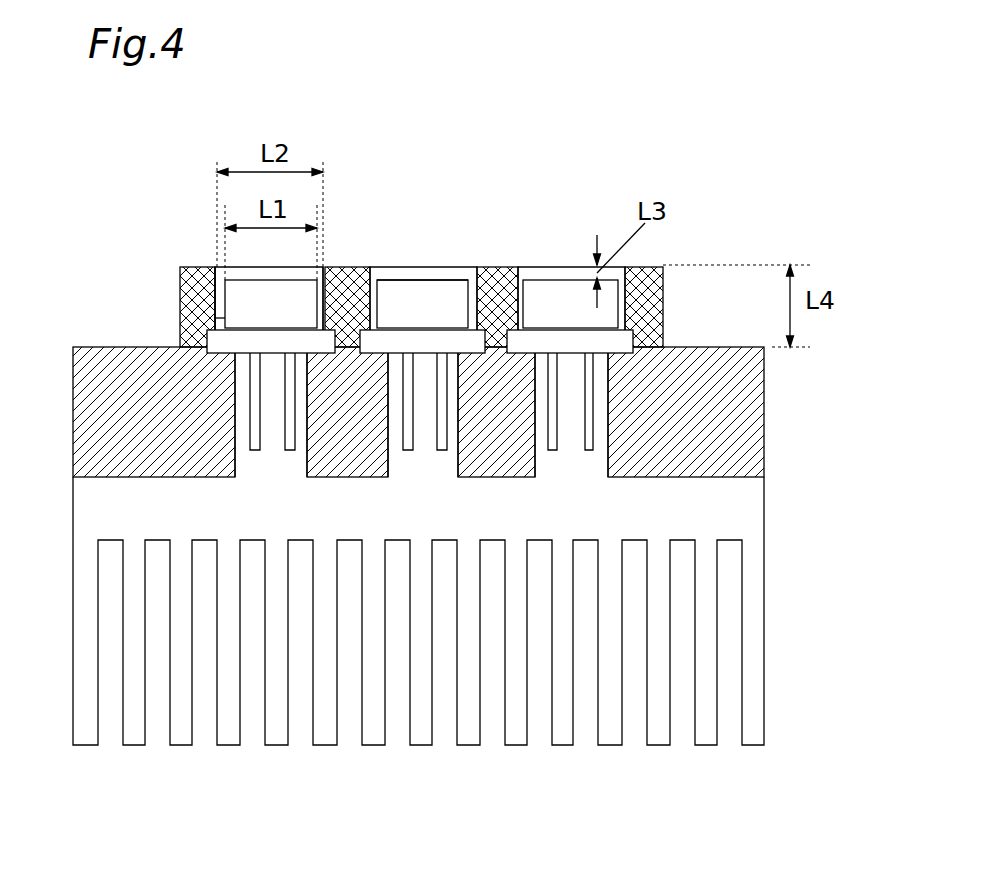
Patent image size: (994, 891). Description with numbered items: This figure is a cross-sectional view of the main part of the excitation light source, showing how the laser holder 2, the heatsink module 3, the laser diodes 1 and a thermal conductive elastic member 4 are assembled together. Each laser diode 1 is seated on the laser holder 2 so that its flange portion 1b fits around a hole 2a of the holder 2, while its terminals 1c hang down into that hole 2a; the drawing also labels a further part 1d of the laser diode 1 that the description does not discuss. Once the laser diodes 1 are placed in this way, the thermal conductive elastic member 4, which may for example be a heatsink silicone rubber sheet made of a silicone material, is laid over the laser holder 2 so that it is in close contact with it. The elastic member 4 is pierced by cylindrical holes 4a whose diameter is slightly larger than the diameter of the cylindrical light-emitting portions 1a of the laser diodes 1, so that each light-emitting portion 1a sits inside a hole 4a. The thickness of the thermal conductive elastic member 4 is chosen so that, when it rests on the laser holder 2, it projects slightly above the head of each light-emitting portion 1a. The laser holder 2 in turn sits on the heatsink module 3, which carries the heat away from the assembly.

The laser diode 1 is at (305, 303).
The light-emitting portion 1a is at (415, 277).
The flange portion 1b is at (233, 347).
The terminals 1c is at (590, 400).
The flange 1d is at (226, 318).
The laser holder 2 is at (98, 402).
The hole 2a is at (600, 457).
The heatsink module 3 is at (732, 517).
The thermal conductive elastic member 4 is at (180, 282).
The cylindrical hole 4a is at (213, 268).